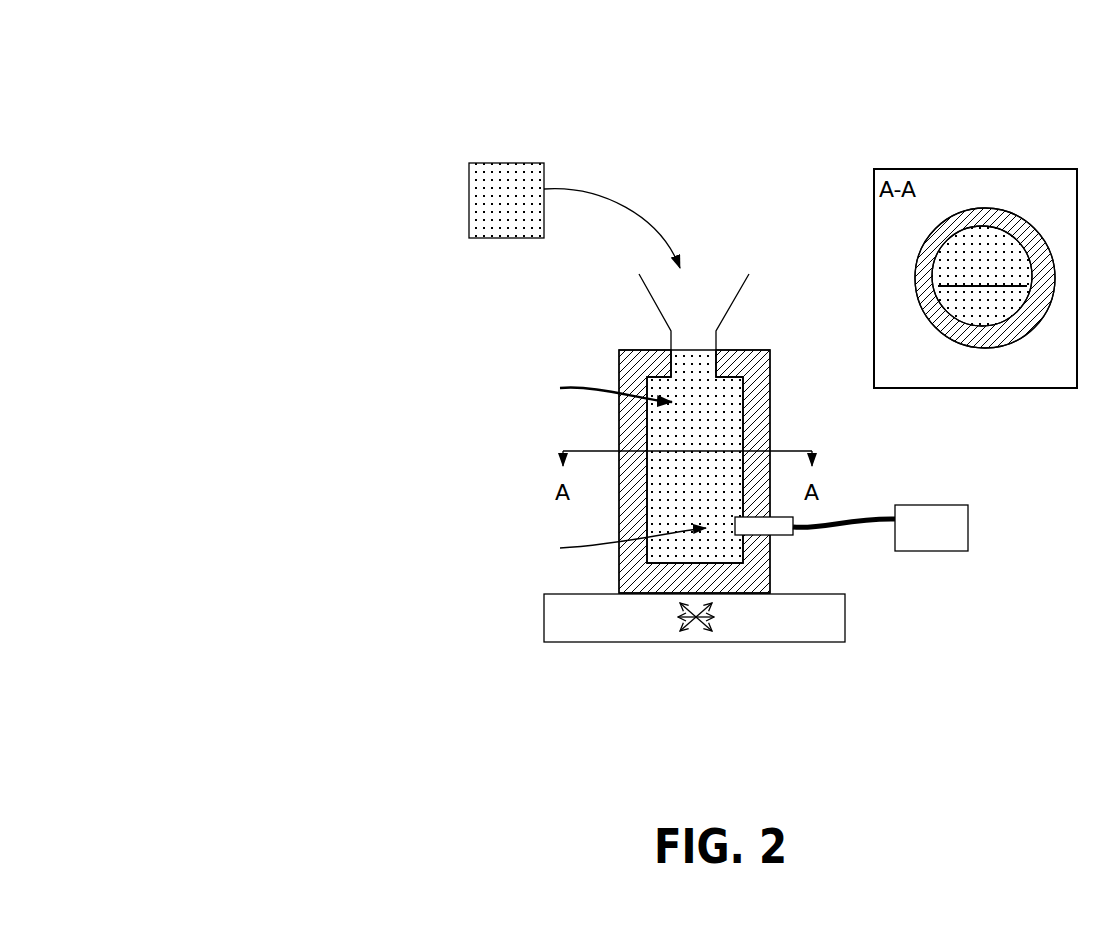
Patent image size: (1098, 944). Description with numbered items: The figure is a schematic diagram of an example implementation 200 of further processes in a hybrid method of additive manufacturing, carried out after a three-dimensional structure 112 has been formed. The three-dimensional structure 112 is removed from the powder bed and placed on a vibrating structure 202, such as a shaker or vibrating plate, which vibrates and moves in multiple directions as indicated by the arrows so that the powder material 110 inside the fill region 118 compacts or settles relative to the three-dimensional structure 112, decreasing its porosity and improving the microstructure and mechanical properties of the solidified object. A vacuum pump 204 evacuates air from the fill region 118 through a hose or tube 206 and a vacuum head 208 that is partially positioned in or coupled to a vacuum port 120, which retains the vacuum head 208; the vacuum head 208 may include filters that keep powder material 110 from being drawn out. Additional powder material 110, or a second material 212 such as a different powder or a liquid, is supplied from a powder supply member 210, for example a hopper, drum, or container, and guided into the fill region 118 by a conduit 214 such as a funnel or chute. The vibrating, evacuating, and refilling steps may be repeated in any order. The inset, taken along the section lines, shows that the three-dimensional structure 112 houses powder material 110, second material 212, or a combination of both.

The implementation 200 is at (284, 52).
The vibrating structure 202 is at (544, 612).
The vacuum pump 204 is at (953, 539).
The hose or tube 206 is at (858, 519).
The vacuum head 208 is at (782, 537).
The powder supply member 210 is at (468, 192).
The second material 212 is at (493, 225).
The conduit 214 is at (651, 300).
The powder material 110 is at (733, 407).
The three-dimensional structure 112 is at (619, 428).
The fill region 118 is at (594, 388).
The vacuum port 120 is at (611, 545).